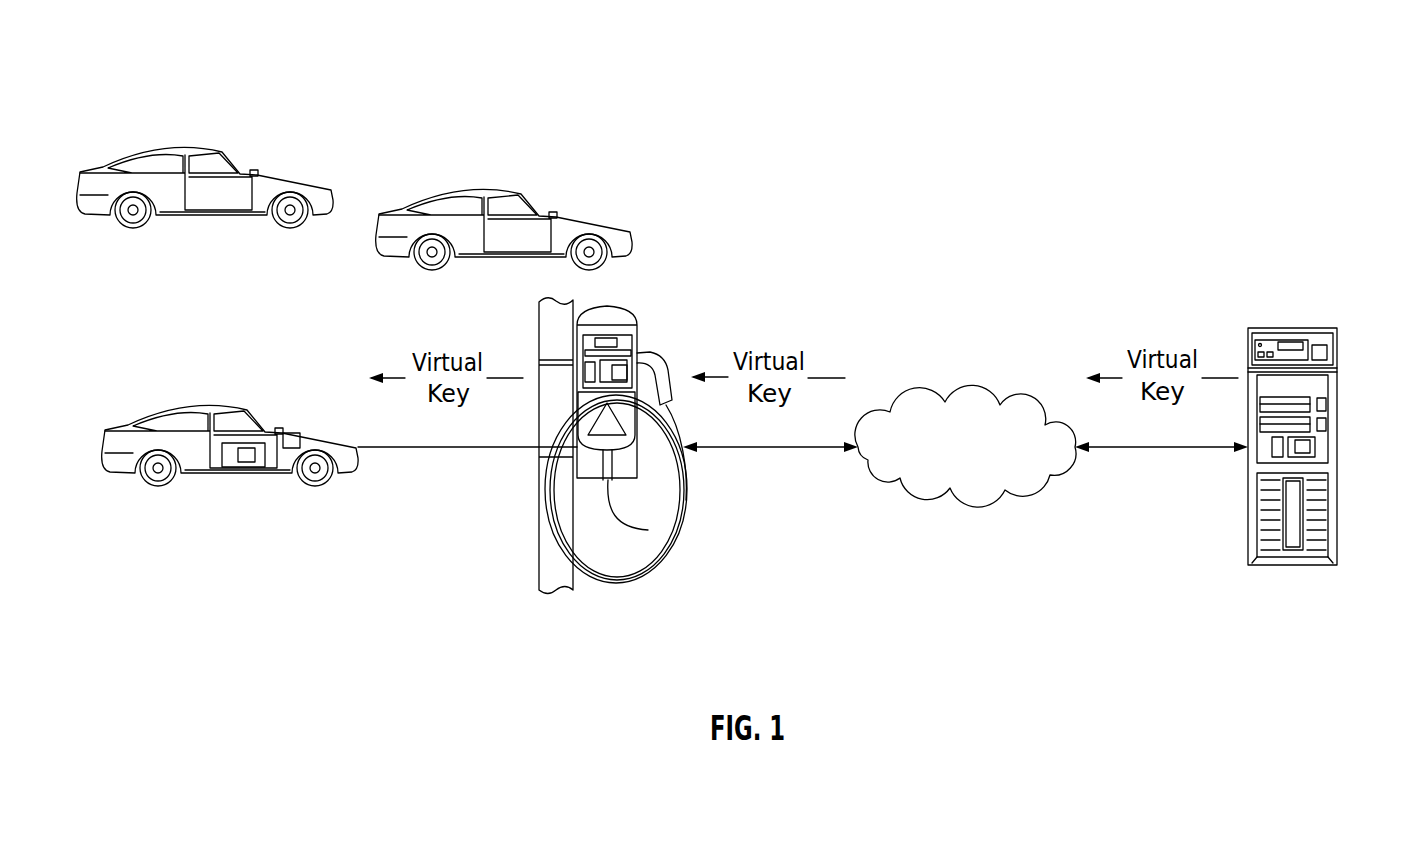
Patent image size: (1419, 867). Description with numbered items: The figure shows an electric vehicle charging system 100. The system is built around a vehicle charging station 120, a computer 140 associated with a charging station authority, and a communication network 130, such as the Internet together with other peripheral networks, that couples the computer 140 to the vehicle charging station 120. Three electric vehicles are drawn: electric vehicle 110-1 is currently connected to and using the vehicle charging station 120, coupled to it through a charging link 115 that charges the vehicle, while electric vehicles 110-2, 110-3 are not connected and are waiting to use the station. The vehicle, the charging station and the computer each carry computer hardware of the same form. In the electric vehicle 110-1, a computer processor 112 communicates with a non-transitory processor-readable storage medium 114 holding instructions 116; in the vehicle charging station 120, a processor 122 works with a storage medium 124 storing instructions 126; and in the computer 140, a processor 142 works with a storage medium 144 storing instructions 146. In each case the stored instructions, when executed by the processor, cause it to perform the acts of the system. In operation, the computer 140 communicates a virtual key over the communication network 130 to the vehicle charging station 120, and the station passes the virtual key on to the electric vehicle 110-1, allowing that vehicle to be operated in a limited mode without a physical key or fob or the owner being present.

The electric vehicle charging system 100 is at (1291, 94).
The electric vehicle 110-1 is at (230, 399).
The electric vehicle 110-2 is at (504, 183).
The electric vehicle 110-3 is at (187, 147).
The computer processor 112 is at (292, 433).
The processor-readable storage medium 114 is at (235, 468).
The instructions 116 is at (250, 463).
The charging link 115 is at (438, 448).
The vehicle charging station 120 is at (603, 308).
The computer processor 122 is at (588, 357).
The processor-readable storage medium 124 is at (620, 360).
The instructions 126 is at (603, 372).
The communication network 130 is at (965, 400).
The computer 140 is at (1292, 327).
The computer processor 142 is at (1272, 450).
The processor-readable storage medium 144 is at (1315, 443).
The instructions 146 is at (1315, 452).